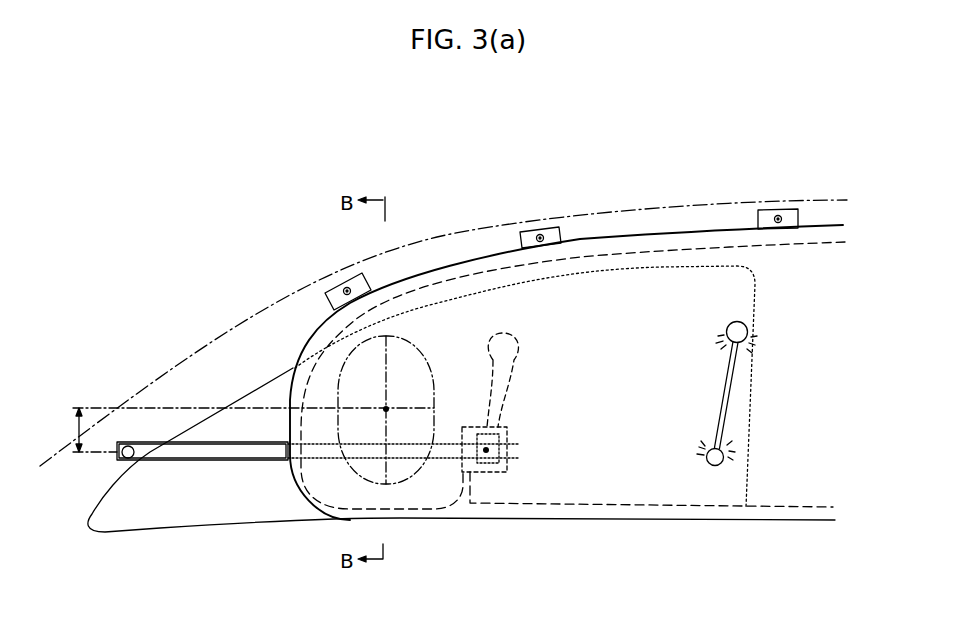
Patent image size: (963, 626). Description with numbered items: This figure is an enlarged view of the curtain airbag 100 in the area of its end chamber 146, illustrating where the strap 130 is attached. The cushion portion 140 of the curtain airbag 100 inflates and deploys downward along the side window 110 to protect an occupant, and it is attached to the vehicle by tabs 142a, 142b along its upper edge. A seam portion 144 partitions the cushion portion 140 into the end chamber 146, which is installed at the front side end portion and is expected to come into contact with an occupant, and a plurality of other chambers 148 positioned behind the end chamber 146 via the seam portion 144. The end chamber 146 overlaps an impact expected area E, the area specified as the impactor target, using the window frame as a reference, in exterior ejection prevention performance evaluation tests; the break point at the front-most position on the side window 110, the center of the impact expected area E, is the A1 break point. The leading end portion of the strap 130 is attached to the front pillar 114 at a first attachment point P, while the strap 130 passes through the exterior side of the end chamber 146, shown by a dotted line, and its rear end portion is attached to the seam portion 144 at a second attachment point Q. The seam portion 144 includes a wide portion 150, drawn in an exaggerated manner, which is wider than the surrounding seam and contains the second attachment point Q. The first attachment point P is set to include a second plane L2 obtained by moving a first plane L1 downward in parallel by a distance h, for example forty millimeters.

The curtain airbag 100 is at (648, 226).
The side window 110 is at (235, 512).
The front pillar 114 is at (203, 346).
The strap 130 is at (215, 450).
The cushion portion 140 is at (727, 253).
The tab 142a is at (338, 291).
The tab 142b is at (533, 229).
The seam portion 144 is at (516, 346).
The end chamber 146 is at (333, 482).
The other chambers 148 is at (657, 487).
The wide portion 150 is at (507, 462).
The impact expected area E is at (420, 358).
The A1 break point A1 is at (386, 409).
The second attachment point Q is at (486, 450).
The first attachment point P is at (128, 458).
The first plane L1 is at (138, 407).
The second plane L2 is at (100, 456).
The distance h is at (71, 430).